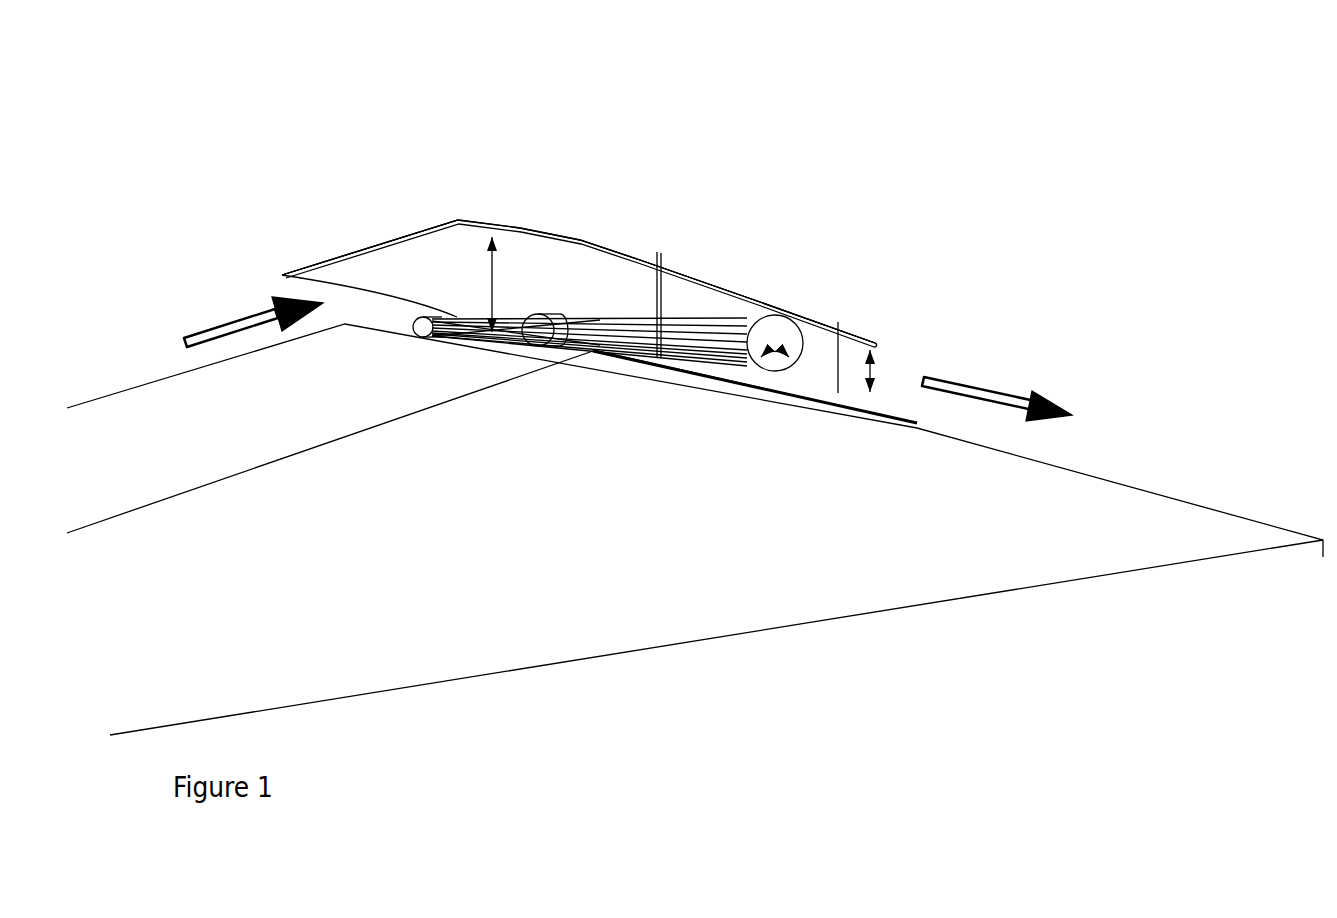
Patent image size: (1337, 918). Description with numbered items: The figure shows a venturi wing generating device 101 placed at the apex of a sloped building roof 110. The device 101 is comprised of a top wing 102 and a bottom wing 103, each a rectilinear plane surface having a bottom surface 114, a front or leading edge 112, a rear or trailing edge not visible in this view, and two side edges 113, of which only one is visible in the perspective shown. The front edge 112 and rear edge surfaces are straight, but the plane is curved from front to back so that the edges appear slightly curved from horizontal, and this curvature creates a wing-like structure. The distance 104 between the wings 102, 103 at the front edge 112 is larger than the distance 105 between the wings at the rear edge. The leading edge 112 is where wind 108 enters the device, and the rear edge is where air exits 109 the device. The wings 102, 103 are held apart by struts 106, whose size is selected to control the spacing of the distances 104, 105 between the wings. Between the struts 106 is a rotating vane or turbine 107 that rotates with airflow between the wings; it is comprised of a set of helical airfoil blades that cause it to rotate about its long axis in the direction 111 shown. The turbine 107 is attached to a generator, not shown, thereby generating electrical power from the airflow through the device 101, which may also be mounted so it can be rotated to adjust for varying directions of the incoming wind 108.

The venturi wing generating device 101 is at (648, 243).
The top wing 102 is at (413, 228).
The bottom wing 103 is at (815, 390).
The distance between the wings at the front edge 104 is at (503, 272).
The distance between the wings at the rear edge 105 is at (887, 363).
The struts 106 is at (838, 345).
The rotating vane or turbine 107 is at (623, 338).
The wind 108 is at (215, 325).
The air exit 109 is at (993, 392).
The building roof 110 is at (322, 407).
The direction of rotation 111 is at (763, 350).
The front or leading edge 112 is at (342, 248).
The side edges 113 is at (613, 243).
The bottom surface 114 is at (448, 291).